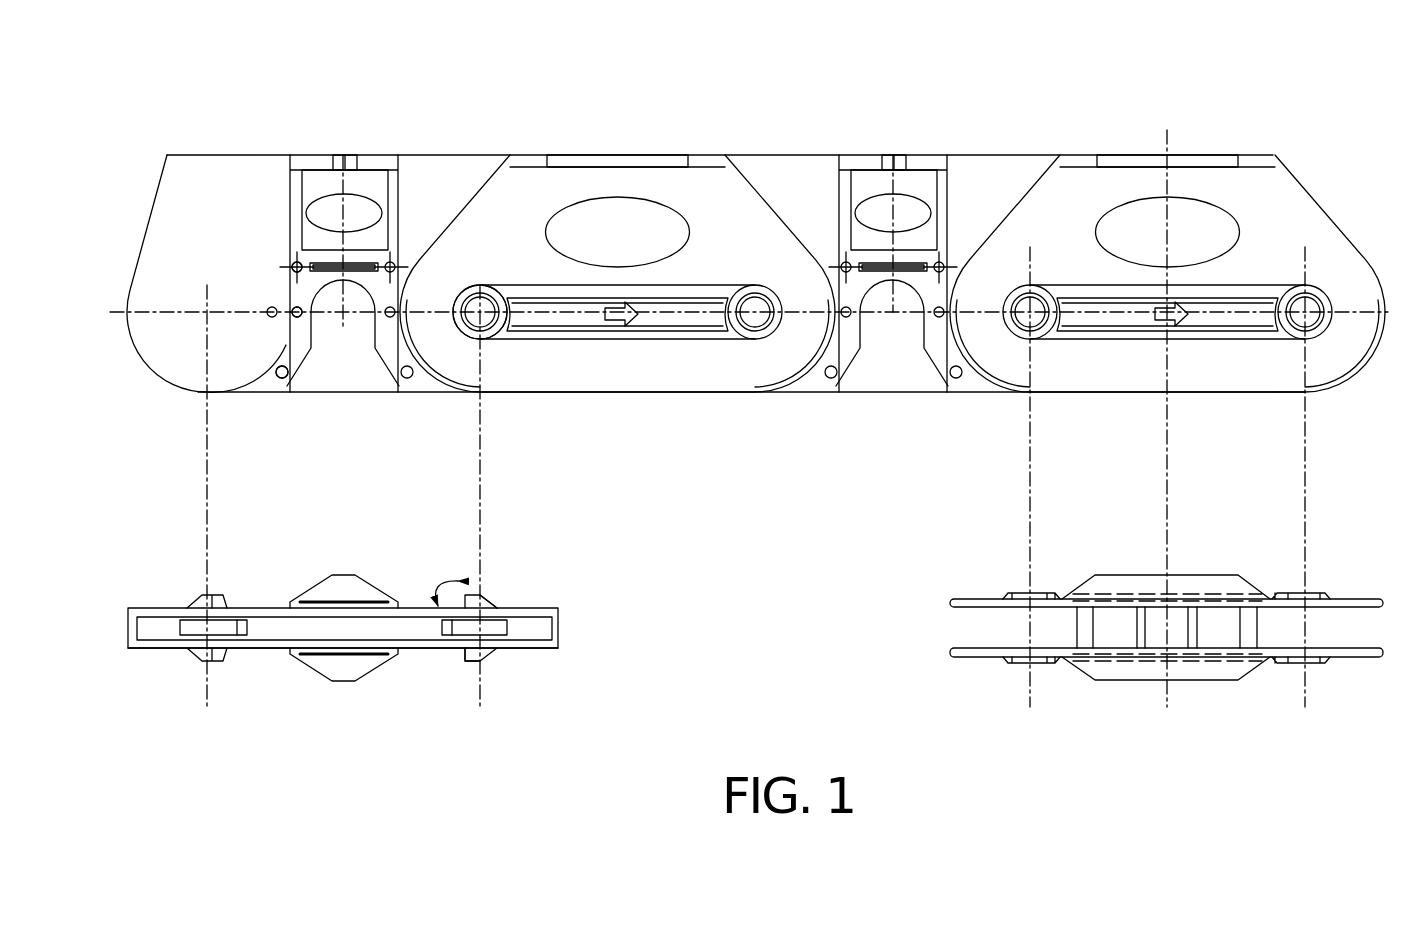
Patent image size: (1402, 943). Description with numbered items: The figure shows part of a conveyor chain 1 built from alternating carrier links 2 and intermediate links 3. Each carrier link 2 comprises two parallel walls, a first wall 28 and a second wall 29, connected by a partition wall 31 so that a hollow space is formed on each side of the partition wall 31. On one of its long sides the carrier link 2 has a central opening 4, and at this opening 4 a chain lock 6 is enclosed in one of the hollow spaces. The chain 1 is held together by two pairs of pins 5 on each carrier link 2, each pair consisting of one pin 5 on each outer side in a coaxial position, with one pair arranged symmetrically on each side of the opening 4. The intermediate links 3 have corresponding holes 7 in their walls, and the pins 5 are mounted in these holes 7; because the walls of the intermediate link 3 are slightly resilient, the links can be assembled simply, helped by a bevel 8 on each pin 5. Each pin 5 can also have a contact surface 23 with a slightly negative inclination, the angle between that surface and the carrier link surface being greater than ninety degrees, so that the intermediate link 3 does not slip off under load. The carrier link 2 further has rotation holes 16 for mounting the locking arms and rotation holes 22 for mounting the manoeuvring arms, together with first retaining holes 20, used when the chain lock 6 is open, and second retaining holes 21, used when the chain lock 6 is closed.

The conveyor chain 1 is at (1128, 83).
The carrier link 2 is at (185, 370).
The intermediate link 3 is at (647, 378).
The central opening 4 is at (345, 370).
The pin 5 is at (207, 597).
The chain lock 6 is at (325, 370).
The hole 7 is at (490, 330).
The bevel 8 is at (495, 602).
The rotation hole 16 is at (277, 380).
The retaining hole 20 is at (272, 312).
The retaining hole 21 is at (297, 312).
The rotation hole 22 is at (297, 267).
The contact surface 23 is at (465, 653).
The first wall 28 is at (560, 610).
The second wall 29 is at (560, 647).
The partition wall 31 is at (532, 628).